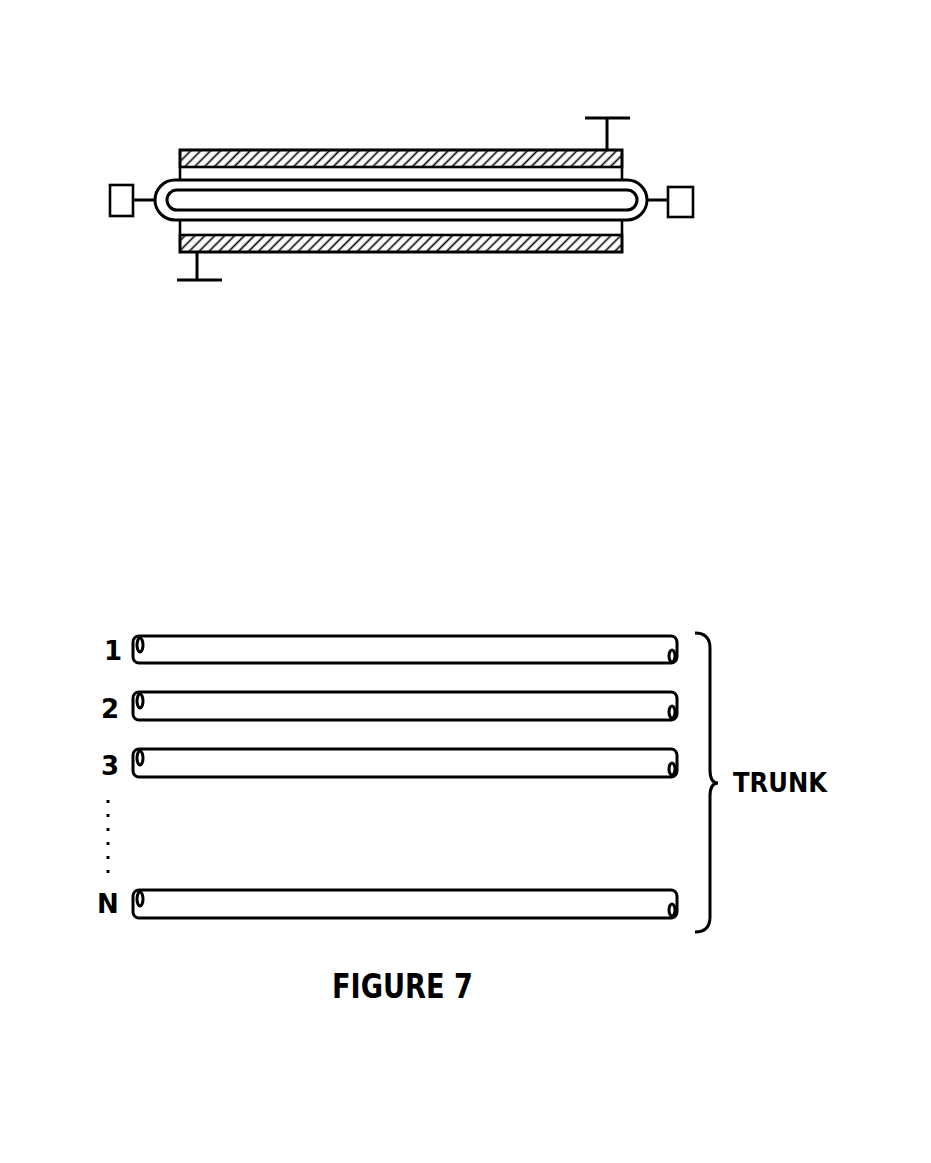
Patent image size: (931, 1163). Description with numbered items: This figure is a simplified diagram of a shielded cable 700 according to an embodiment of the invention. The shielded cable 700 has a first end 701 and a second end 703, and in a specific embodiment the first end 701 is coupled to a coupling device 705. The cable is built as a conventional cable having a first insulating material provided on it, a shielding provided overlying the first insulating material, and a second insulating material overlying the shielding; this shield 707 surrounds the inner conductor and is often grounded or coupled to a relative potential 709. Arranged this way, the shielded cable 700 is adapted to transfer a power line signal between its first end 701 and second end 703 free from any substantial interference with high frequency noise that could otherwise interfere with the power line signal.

The shielded cable 700 is at (414, 172).
The first end 701 is at (146, 119).
The second end 703 is at (640, 272).
The coupling device 705 is at (117, 216).
The shield 707 is at (389, 150).
The relative potential 709 is at (595, 115).